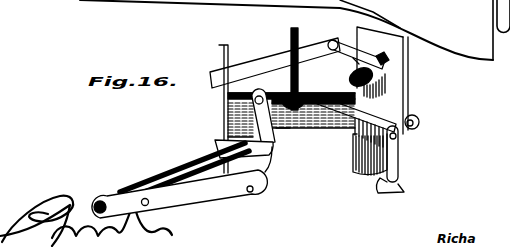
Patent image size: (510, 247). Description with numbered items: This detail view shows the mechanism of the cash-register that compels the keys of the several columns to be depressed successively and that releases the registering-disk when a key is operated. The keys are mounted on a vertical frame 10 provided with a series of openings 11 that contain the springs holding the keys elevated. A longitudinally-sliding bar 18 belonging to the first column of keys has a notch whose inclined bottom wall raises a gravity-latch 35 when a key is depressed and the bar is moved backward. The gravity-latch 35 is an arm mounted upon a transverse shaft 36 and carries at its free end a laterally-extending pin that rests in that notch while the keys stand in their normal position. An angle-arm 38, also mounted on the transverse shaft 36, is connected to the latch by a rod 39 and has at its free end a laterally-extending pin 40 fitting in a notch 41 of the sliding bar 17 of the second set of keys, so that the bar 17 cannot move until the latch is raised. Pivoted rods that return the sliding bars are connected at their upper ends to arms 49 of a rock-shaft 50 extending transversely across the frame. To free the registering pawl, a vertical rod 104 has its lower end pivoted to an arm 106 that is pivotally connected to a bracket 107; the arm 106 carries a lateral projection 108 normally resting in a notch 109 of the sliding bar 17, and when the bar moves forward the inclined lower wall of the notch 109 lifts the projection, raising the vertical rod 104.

The vertical frame 10 is at (219, 46).
The openings 11 is at (257, 64).
The sliding bar 17 is at (229, 97).
The longitudinally-sliding bar 18 is at (345, 131).
The gravity-latch 35 is at (202, 188).
The transverse shaft 36 is at (168, 171).
The angle-arm 38 is at (229, 106).
The rod 39 is at (249, 157).
The laterally-extending pin 40 is at (276, 88).
The notch 41 is at (285, 128).
The arms 49 is at (354, 46).
The rock-shaft 50 is at (376, 80).
The vertical rod 104 is at (299, 31).
The arm 106 is at (381, 117).
The bracket 107 is at (394, 154).
The lateral projection 108 is at (306, 98).
The notch 109 is at (356, 61).